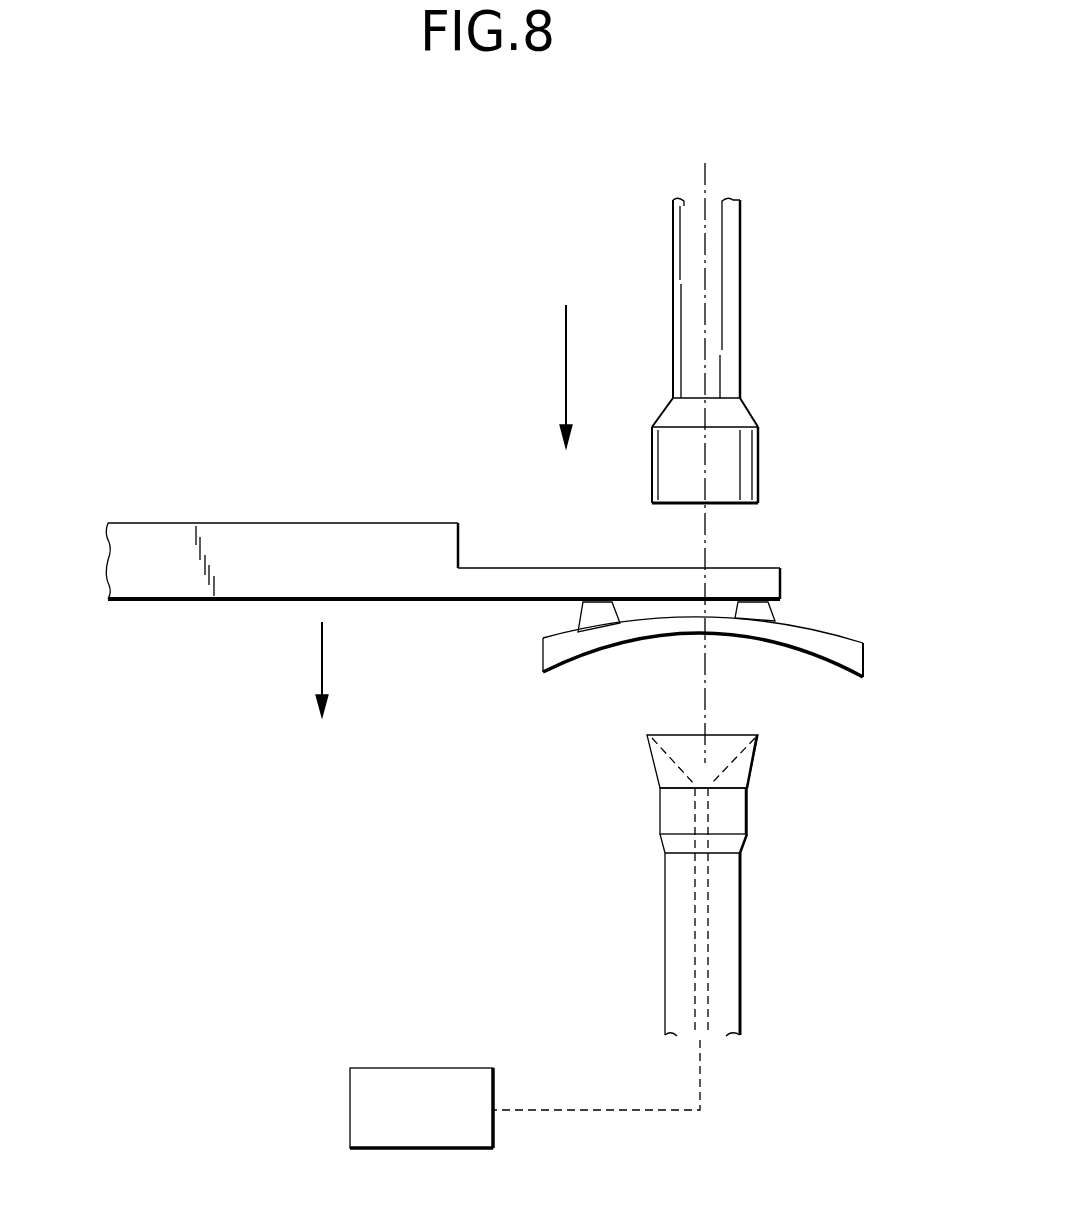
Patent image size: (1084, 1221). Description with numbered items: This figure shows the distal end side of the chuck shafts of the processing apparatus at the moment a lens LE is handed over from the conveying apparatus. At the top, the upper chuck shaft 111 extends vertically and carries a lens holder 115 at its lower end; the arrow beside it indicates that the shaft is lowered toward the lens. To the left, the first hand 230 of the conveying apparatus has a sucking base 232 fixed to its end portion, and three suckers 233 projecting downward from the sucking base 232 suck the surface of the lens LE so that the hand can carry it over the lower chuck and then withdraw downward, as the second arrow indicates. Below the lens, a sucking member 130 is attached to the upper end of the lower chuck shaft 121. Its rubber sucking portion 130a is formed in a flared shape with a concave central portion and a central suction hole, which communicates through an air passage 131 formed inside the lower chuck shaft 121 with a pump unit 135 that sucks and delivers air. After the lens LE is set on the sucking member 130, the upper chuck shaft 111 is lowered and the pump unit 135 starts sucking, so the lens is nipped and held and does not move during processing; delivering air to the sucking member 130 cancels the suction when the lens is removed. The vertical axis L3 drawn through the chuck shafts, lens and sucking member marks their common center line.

The upper chuck shaft 111 is at (730, 307).
The lens holder 115 is at (745, 470).
The first hand 230 is at (325, 530).
The sucking base 232 is at (525, 576).
The suckers 233 is at (767, 610).
The lens LE is at (865, 655).
The optical axis L3 is at (707, 690).
The sucking portion 130a is at (657, 765).
The sucking member 130 is at (670, 885).
The lower chuck shaft 121 is at (738, 935).
The air passage 131 is at (697, 990).
The pump unit 135 is at (360, 1068).